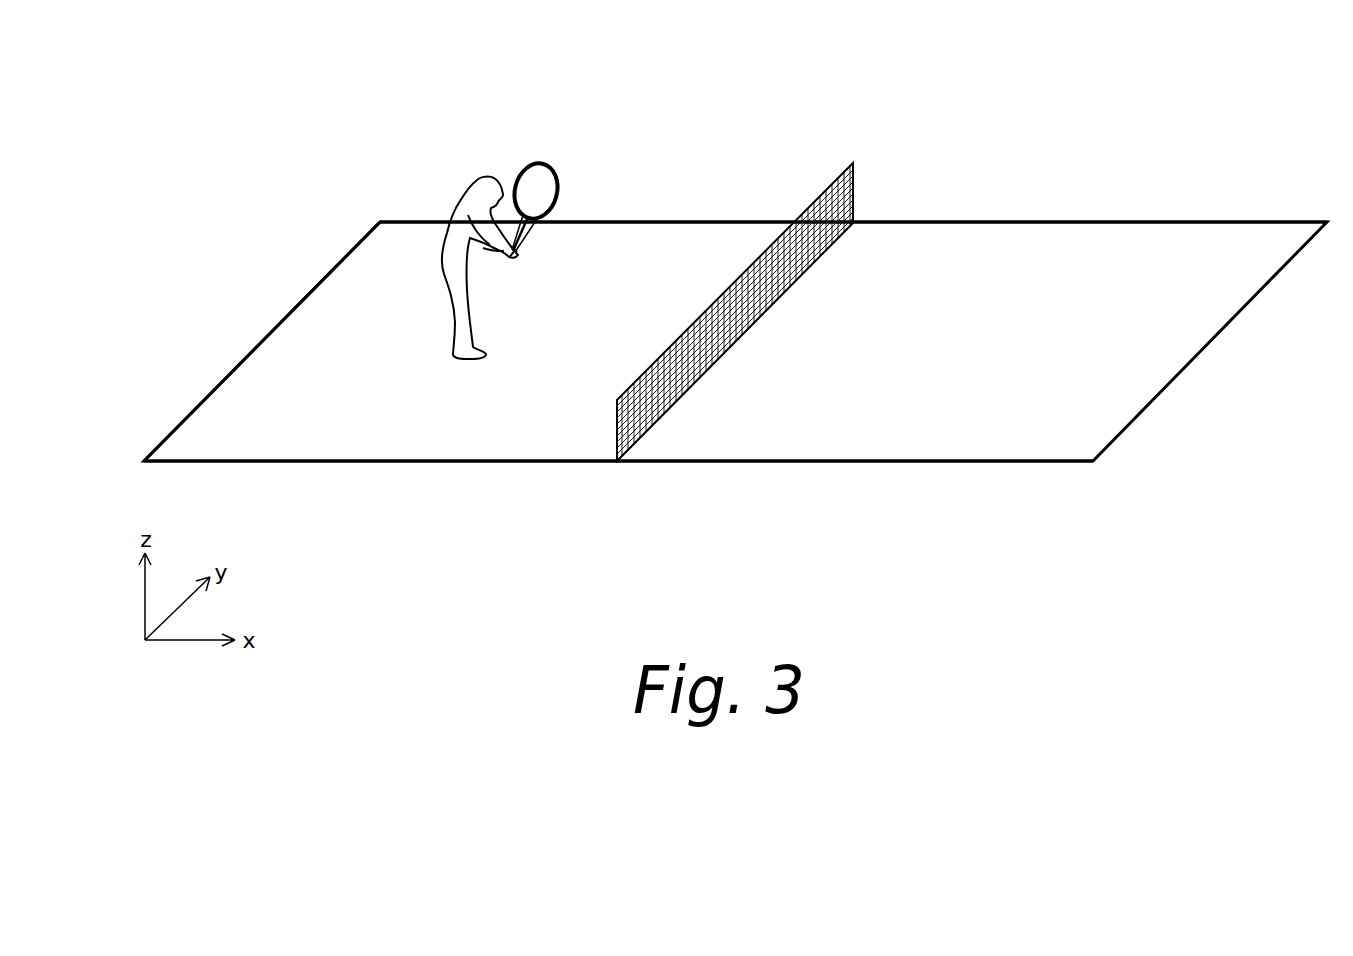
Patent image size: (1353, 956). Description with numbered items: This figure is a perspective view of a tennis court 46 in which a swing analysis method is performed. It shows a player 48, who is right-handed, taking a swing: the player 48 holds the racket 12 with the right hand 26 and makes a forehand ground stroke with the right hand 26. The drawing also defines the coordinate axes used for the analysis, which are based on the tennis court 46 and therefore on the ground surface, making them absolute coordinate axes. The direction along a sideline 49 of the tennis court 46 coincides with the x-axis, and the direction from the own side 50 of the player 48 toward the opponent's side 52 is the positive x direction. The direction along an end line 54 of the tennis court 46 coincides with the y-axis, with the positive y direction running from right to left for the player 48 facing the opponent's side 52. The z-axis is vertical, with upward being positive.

The racket 12 is at (537, 163).
The right hand 26 is at (517, 257).
The tennis court 46 is at (865, 207).
The player 48 is at (447, 257).
The sideline 49 is at (718, 462).
The own side 50 is at (672, 240).
The opponent's side 52 is at (1000, 237).
The end line 54 is at (217, 386).